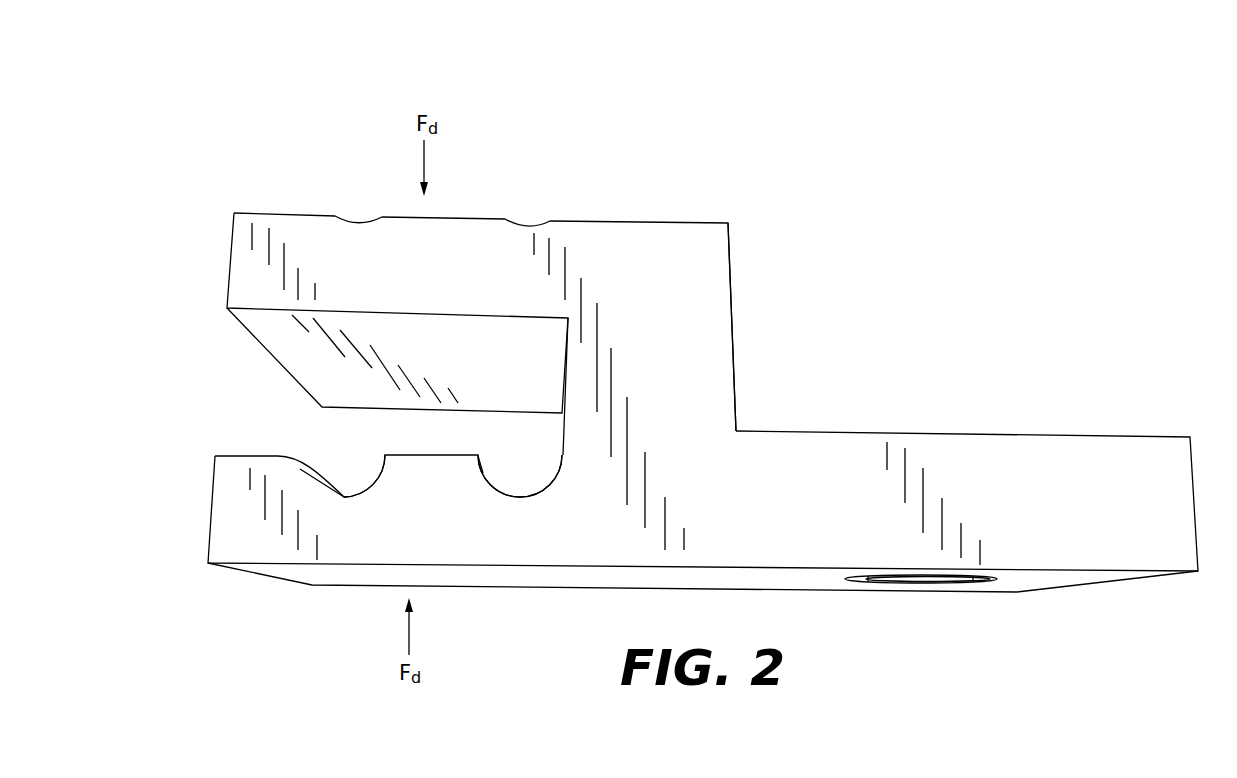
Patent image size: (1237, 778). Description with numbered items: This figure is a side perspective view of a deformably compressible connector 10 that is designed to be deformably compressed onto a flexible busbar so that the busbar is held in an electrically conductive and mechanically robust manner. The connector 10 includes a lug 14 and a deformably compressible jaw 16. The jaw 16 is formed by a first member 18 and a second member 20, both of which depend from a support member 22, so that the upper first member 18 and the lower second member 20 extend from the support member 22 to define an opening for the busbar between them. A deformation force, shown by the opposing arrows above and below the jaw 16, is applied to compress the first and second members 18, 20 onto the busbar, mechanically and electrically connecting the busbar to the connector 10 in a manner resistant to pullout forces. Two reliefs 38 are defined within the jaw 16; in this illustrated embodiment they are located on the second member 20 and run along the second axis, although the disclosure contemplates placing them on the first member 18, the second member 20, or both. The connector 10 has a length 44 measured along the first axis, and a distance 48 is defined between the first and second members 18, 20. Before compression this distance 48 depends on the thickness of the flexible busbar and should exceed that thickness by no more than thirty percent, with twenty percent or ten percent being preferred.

The deformably compressible connector 10 is at (880, 88).
The lug 14 is at (1115, 490).
The deformably compressible jaw 16 is at (660, 176).
The first member 18 is at (247, 260).
The second member 20 is at (230, 518).
The support member 22 is at (692, 344).
The reliefs 38 is at (502, 497).
The length 44 is at (568, 285).
The distance 48 is at (211, 312).